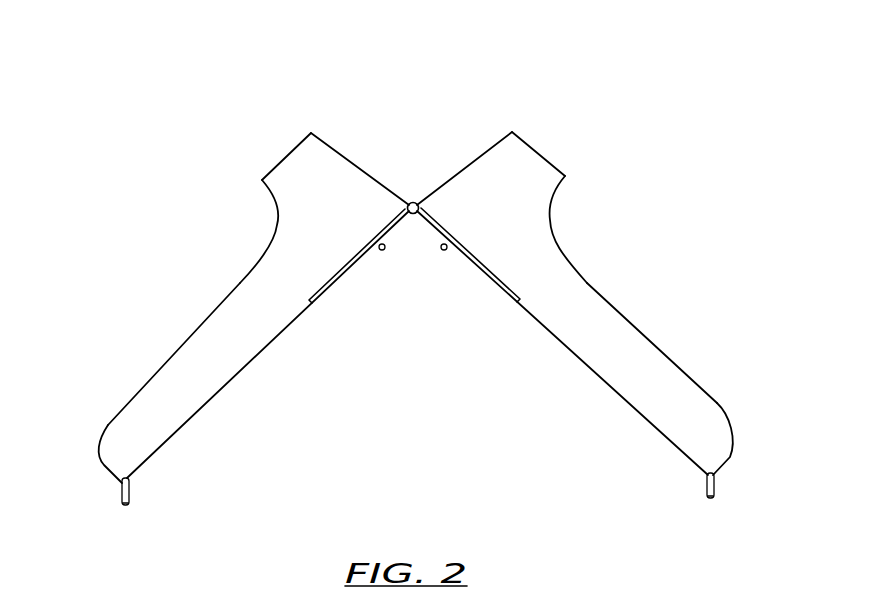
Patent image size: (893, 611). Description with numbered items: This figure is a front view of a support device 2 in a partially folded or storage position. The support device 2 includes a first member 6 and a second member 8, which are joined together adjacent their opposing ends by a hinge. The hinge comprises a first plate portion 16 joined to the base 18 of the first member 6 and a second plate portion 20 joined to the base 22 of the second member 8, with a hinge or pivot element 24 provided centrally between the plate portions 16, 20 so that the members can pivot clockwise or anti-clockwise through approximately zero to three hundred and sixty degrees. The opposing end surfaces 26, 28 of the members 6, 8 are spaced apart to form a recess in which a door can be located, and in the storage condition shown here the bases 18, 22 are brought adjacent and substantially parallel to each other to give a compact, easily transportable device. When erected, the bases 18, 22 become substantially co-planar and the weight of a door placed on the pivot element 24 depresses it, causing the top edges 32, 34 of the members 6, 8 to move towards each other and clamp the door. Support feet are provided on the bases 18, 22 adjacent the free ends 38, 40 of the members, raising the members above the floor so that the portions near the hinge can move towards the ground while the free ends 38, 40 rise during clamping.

The support device 2 is at (548, 139).
The first member 6 is at (301, 165).
The second member 8 is at (533, 177).
The first plate portion 16 is at (333, 287).
The base of first member 18 is at (233, 379).
The second plate portion 20 is at (495, 286).
The base of second member 22 is at (598, 374).
The hinge or pivot element 24 is at (411, 202).
The end surface of first member 26 is at (343, 165).
The end surface of second member 28 is at (480, 163).
The top edge of first member 32 is at (311, 133).
The top edge of second member 34 is at (512, 132).
The free end of first member 38 is at (105, 472).
The free end of second member 40 is at (723, 467).